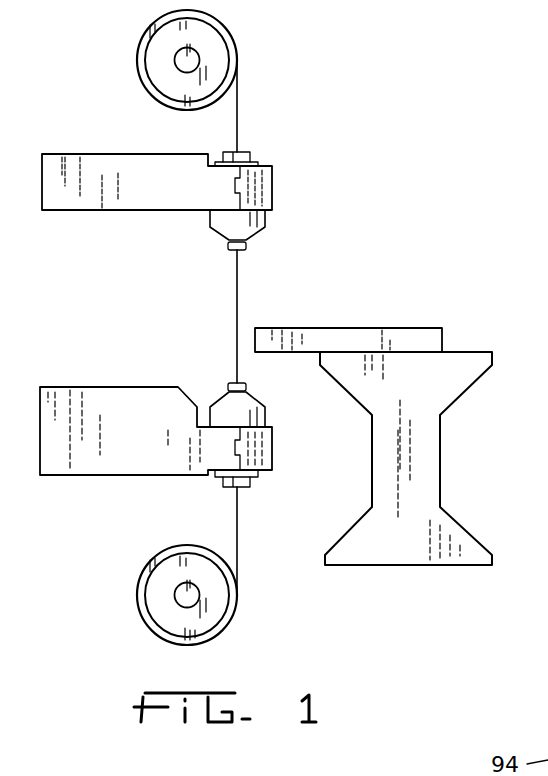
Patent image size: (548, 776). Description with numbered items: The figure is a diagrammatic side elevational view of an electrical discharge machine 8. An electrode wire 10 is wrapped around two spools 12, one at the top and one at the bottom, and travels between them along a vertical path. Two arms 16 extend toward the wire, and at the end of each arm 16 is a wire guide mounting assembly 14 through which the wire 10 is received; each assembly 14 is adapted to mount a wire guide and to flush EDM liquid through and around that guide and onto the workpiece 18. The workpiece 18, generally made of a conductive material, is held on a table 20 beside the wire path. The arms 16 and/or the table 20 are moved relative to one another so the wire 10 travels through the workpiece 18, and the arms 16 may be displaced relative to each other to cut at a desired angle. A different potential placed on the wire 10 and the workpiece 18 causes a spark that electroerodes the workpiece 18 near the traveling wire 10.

The electrical discharge machine 8 is at (331, 231).
The electrode wire 10 is at (237, 128).
The spools 12 is at (158, 52).
The wire guide mounting assemblies 14 is at (281, 232).
The arms 16 is at (170, 194).
The workpiece 18 is at (346, 335).
The table 20 is at (412, 540).